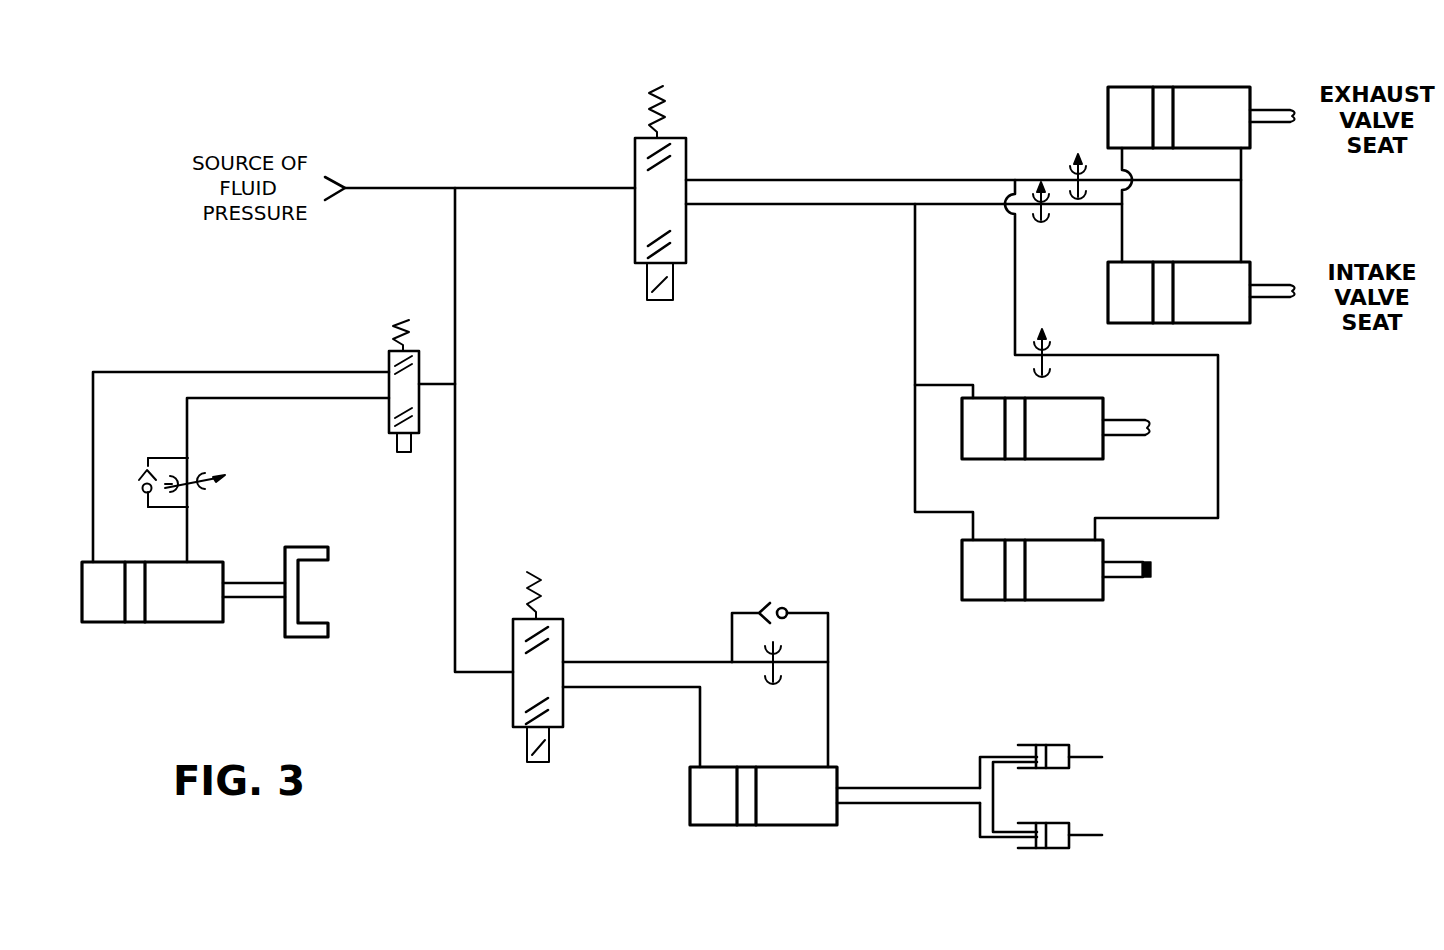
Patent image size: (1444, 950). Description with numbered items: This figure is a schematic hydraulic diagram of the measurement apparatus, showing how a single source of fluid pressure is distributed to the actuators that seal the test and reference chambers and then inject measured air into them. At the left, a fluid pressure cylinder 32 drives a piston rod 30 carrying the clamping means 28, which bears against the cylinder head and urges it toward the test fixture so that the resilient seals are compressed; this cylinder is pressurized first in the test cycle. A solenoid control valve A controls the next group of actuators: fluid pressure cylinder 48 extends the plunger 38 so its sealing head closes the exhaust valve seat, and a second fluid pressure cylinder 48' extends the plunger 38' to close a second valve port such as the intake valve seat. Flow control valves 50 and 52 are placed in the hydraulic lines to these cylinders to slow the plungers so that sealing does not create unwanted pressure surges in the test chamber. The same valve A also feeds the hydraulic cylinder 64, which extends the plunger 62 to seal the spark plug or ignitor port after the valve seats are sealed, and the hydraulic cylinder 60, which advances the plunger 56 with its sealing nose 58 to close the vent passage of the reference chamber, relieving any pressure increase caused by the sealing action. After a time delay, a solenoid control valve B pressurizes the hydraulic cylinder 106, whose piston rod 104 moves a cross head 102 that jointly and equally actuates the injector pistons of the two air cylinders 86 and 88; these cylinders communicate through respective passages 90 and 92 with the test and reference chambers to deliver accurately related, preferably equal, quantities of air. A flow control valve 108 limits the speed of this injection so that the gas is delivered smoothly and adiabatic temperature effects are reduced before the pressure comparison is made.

The clamping means 28 is at (290, 547).
The piston rod 30 is at (252, 597).
The fluid pressure cylinder 32 is at (165, 622).
The plunger 38 is at (1277, 139).
The plunger 38' is at (1281, 263).
The fluid pressure cylinder 48 is at (1179, 97).
The fluid pressure cylinder 48' is at (1196, 310).
The flow control valve 50 is at (1075, 158).
The flow control valve 52 is at (1040, 213).
The plunger 56 is at (1127, 578).
The sealing nose 58 is at (1150, 565).
The hydraulic cylinder 60 is at (1060, 600).
The plunger 62 is at (1135, 420).
The hydraulic cylinder 64 is at (1043, 459).
The air cylinder 86 is at (1023, 745).
The air cylinder 88 is at (1023, 850).
The passage 90 is at (1083, 757).
The passage 92 is at (1097, 838).
The cross head 102 is at (980, 825).
The piston rod 104 is at (882, 787).
The hydraulic cylinder 106 is at (800, 825).
The flow control valve 108 is at (778, 647).
The solenoid control valve A is at (688, 226).
The solenoid control valve B is at (565, 708).